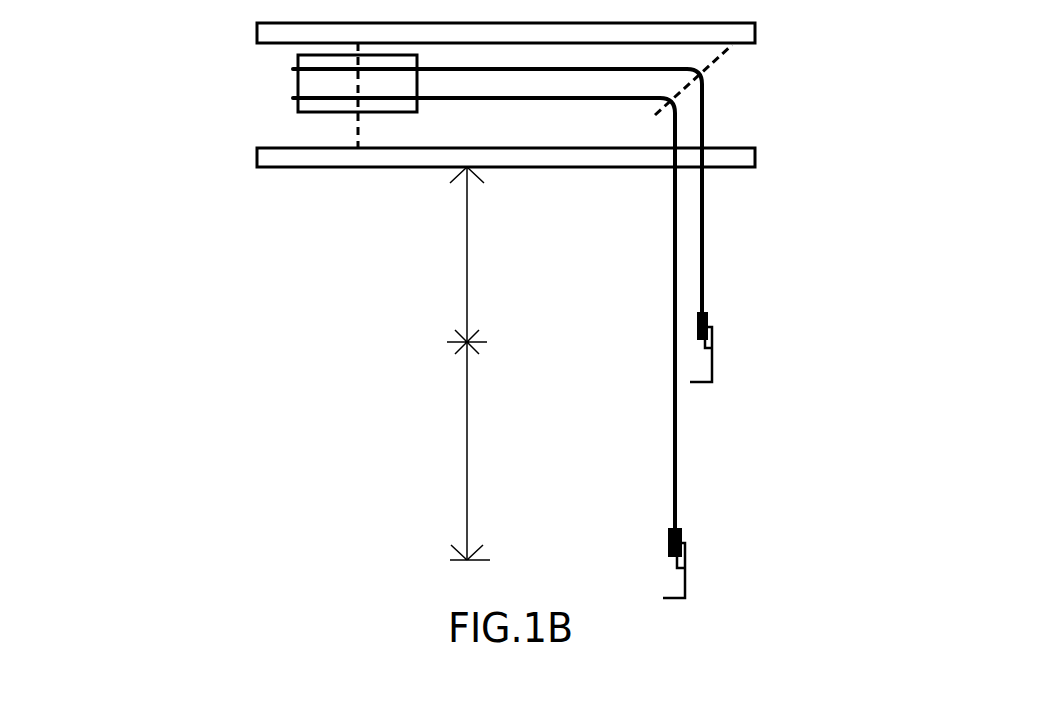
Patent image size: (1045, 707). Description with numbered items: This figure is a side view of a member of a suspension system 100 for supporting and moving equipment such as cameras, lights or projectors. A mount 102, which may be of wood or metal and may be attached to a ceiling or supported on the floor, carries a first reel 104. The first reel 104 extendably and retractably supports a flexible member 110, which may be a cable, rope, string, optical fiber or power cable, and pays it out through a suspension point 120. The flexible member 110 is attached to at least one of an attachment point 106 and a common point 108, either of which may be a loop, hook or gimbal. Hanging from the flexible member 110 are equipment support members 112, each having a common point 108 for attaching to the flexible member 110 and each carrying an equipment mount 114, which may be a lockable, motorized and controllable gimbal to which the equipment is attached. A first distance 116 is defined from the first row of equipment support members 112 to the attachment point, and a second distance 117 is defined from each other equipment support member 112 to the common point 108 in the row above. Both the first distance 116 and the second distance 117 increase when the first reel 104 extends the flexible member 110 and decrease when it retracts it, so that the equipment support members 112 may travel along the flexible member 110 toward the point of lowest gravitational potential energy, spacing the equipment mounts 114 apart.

The suspension system 100 is at (298, 388).
The mount 102 is at (257, 157).
The first reel 104 is at (296, 82).
The attachment point 106 is at (675, 172).
The suspension point 120 is at (702, 170).
The common point 108 is at (700, 343).
The flexible member 110 is at (705, 212).
The equipment support member 112 is at (760, 336).
The equipment mount 114 is at (712, 367).
The first distance 116 is at (467, 272).
The second distance 117 is at (467, 480).